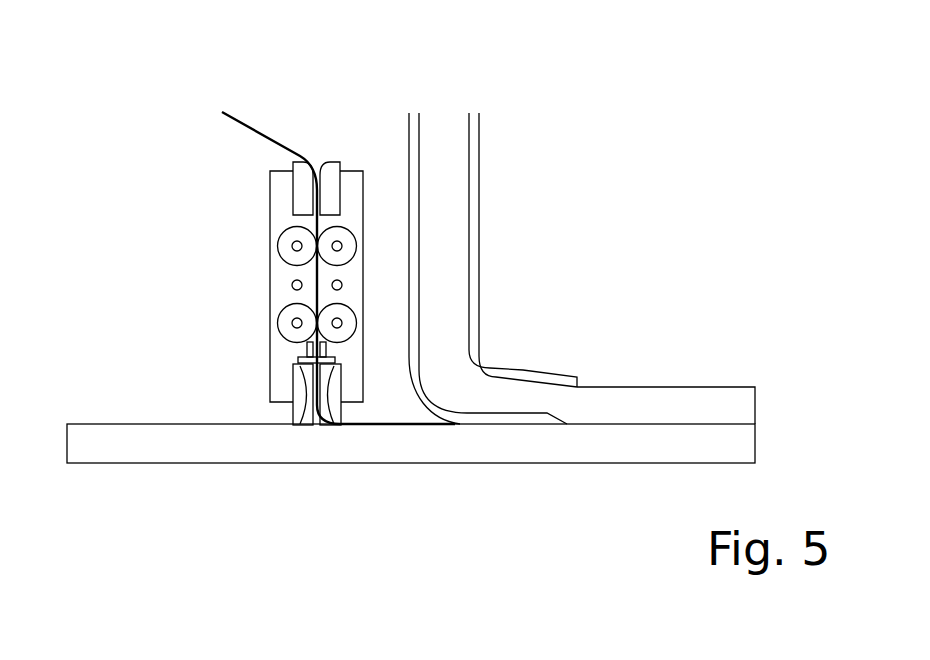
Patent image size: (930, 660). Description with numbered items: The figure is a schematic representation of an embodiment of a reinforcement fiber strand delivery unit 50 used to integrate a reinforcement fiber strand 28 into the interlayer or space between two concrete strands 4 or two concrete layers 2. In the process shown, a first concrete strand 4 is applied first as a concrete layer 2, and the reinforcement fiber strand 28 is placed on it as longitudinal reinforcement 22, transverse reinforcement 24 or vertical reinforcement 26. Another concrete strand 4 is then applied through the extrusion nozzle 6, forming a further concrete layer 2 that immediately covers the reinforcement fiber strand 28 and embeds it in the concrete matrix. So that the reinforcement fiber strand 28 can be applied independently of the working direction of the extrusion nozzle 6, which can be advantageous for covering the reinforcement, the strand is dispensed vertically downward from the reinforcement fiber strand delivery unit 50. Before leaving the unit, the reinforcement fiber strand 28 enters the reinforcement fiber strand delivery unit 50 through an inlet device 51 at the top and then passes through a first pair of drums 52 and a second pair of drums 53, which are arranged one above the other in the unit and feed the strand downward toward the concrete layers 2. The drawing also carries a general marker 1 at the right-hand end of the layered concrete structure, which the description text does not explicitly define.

The electrode assembly 1 is at (445, 235).
The concrete layer 2 is at (142, 433).
The concrete strand 4 is at (698, 398).
The extrusion nozzle 6 is at (553, 373).
The longitudinal reinforcement 22 is at (478, 215).
The transverse reinforcement 24 is at (478, 215).
The vertical reinforcement 26 is at (338, 215).
The reinforcement fiber strand 28 is at (338, 215).
The reinforcement fiber strand delivery unit 50 is at (288, 233).
The inlet device 51 is at (342, 161).
The first pair of drums 52 is at (290, 240).
The second pair of drums 53 is at (290, 315).